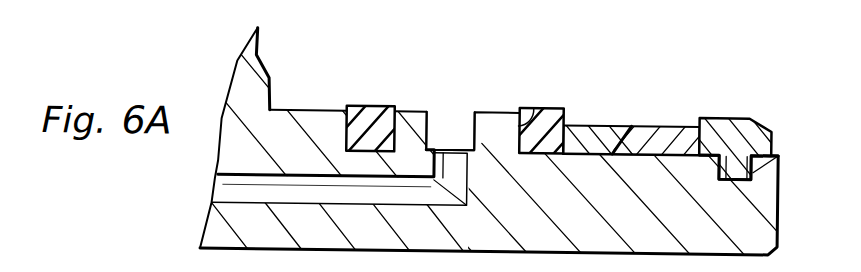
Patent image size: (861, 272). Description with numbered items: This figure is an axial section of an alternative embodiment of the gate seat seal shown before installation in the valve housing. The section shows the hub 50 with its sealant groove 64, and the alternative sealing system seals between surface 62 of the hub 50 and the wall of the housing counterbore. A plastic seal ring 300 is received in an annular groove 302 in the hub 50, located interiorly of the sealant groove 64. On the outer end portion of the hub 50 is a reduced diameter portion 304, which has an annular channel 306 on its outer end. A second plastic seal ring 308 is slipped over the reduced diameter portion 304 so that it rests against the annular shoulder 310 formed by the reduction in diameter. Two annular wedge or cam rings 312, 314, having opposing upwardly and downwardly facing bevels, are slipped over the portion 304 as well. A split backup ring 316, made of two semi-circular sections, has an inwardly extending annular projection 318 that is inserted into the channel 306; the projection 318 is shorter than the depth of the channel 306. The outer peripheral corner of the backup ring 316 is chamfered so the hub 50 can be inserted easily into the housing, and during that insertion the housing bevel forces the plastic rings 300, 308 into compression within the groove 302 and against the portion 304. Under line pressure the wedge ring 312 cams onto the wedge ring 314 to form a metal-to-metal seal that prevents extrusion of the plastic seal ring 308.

The hub 50 is at (760, 228).
The surface 62 is at (282, 108).
The sealant groove 64 is at (426, 120).
The plastic seal ring 300 is at (366, 108).
The annular groove 302 is at (345, 125).
The reduced diameter portion 304 is at (621, 133).
The annular channel 306 is at (756, 166).
The plastic seal ring 308 is at (543, 109).
The annular shoulder 310 is at (530, 107).
The wedge ring 312 is at (587, 124).
The wedge ring 314 is at (663, 127).
The split backup ring 316 is at (740, 121).
The annular projection 318 is at (746, 172).